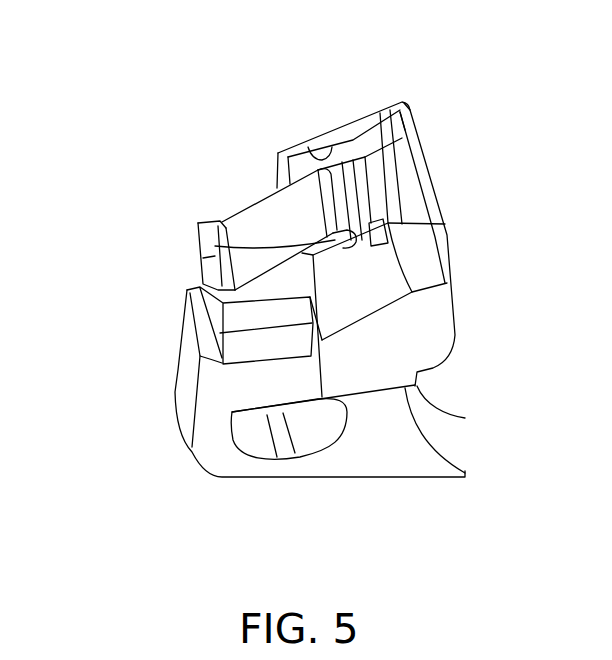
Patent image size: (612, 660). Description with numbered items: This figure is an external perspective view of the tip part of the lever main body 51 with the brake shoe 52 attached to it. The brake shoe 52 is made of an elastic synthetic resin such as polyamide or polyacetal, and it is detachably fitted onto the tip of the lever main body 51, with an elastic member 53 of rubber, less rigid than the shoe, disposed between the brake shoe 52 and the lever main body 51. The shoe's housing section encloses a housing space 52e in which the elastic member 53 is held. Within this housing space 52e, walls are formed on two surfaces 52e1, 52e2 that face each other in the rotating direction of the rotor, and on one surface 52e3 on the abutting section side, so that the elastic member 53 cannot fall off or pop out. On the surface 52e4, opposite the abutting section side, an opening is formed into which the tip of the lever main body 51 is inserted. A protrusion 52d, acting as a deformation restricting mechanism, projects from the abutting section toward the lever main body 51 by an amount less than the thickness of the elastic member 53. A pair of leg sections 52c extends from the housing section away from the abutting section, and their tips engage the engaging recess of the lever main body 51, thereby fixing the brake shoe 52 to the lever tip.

The lever main body 51 is at (378, 478).
The brake shoe 52 is at (422, 114).
The leg sections 52c is at (227, 318).
The protrusion 52d is at (365, 190).
The housing space 52e is at (357, 150).
The first opposing surface 52e1 is at (305, 140).
The second opposing surface 52e2 is at (398, 226).
The abutting-side surface 52e3 is at (370, 152).
The opening surface 52e4 is at (205, 243).
The elastic member 53 is at (318, 156).